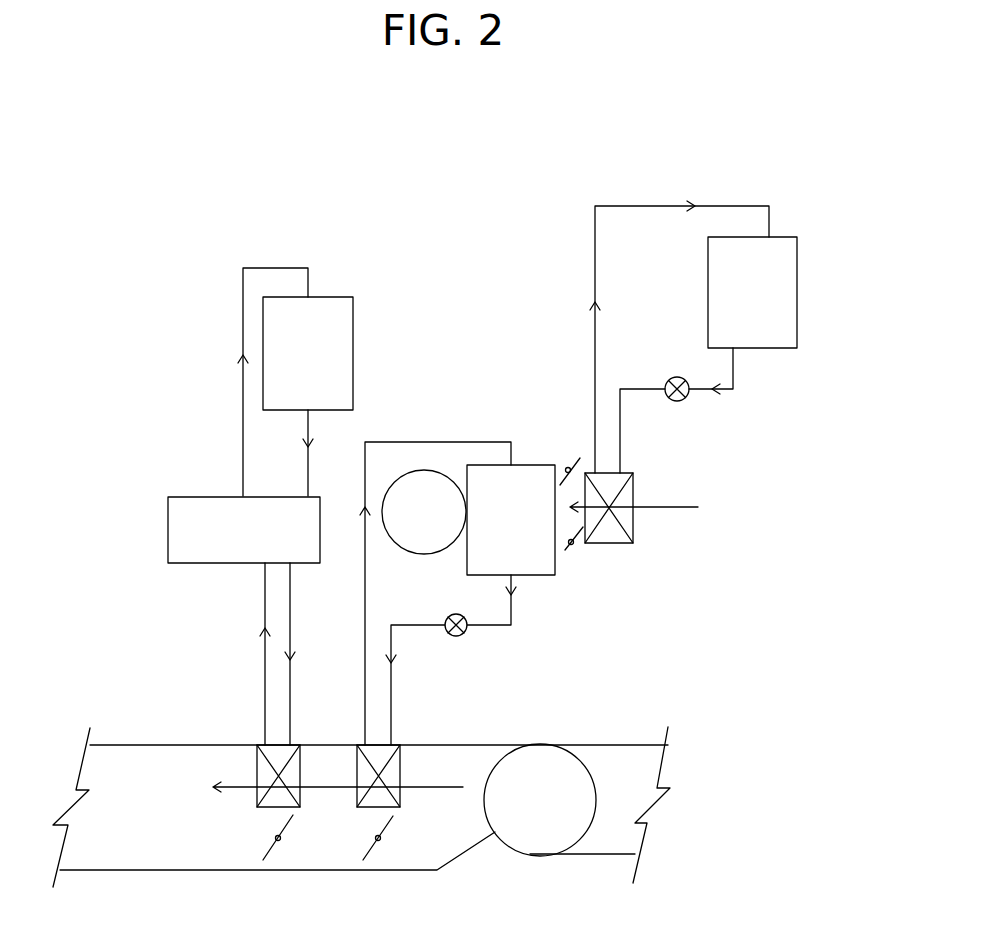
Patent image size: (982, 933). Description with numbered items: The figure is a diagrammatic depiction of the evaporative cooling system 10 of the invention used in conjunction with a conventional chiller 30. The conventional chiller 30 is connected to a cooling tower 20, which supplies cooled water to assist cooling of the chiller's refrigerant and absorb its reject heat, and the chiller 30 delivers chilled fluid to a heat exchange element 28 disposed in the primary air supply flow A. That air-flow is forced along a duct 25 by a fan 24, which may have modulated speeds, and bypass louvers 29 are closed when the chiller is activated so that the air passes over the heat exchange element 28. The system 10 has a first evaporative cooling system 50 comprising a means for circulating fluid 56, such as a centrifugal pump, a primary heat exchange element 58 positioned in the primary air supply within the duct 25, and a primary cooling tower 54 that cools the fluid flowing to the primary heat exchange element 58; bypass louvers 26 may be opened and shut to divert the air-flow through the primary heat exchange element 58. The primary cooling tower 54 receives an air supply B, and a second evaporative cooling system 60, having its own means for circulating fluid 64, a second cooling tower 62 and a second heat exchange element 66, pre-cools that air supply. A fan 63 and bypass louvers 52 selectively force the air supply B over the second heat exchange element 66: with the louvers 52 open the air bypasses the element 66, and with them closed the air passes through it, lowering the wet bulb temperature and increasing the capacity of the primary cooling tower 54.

The cooling system 10 is at (445, 242).
The cooling tower 20 is at (343, 318).
The fan 24 is at (535, 843).
The duct 25 is at (598, 745).
The bypass louvers 26 is at (376, 853).
The heat exchange element 28 is at (257, 811).
The bypass louvers 29 is at (292, 833).
The conventional chiller 30 is at (175, 546).
The first evaporative cooling system 50 is at (484, 555).
The bypass louvers 52 is at (564, 553).
The primary cooling tower 54 is at (530, 465).
The means for circulating fluid 56 is at (462, 637).
The primary heat exchange element 58 is at (400, 770).
The second evaporative cooling system 60 is at (720, 298).
The second cooling tower 62 is at (787, 263).
The fan 63 is at (408, 474).
The means for circulating fluid 64 is at (683, 401).
The second heat exchange element 66 is at (618, 543).